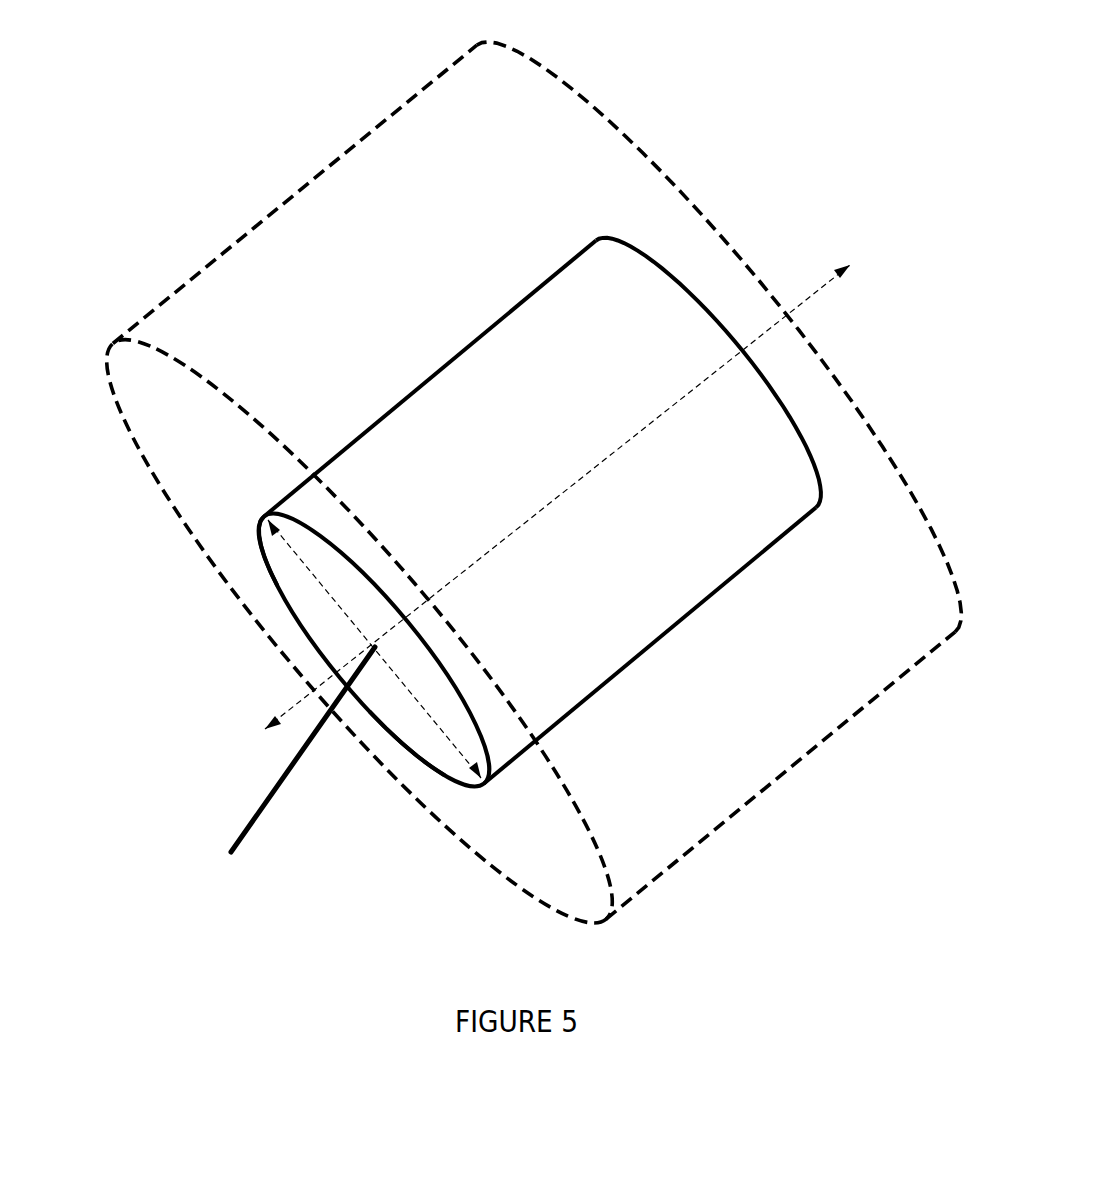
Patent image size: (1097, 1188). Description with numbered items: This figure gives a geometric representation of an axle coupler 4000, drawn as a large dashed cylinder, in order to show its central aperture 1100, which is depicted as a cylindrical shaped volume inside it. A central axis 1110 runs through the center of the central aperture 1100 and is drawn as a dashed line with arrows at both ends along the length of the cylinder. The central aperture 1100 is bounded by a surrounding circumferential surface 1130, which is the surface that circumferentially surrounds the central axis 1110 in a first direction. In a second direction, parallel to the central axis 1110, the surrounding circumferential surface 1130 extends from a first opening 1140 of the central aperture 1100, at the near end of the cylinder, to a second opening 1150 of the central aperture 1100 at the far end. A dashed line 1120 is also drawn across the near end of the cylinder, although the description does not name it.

The axle coupler 4000 is at (535, 176).
The second opening 1150 is at (791, 412).
The central axis 1110 is at (805, 298).
The diameter 1120 is at (357, 624).
The central aperture 1100 is at (285, 773).
The surrounding circumferential surface 1130 is at (392, 712).
The first opening 1140 is at (160, 527).